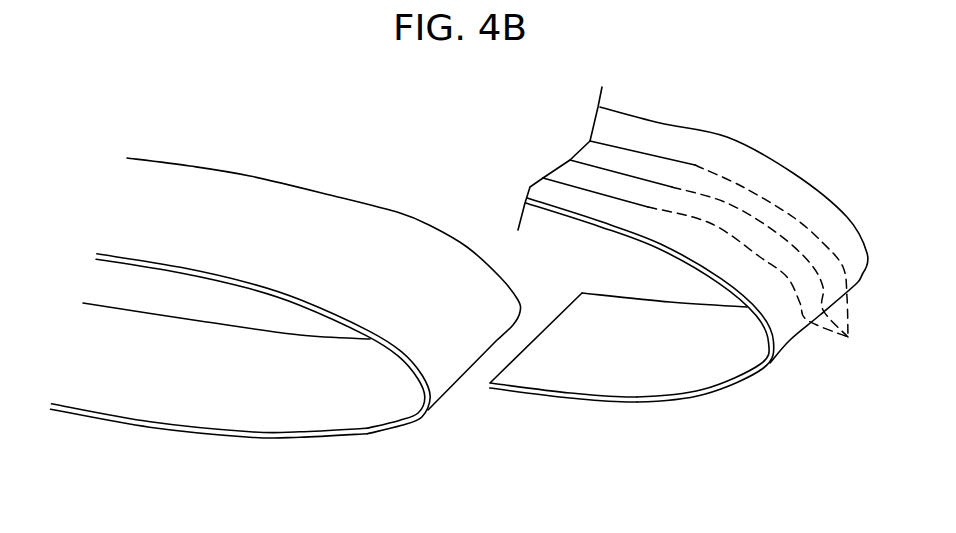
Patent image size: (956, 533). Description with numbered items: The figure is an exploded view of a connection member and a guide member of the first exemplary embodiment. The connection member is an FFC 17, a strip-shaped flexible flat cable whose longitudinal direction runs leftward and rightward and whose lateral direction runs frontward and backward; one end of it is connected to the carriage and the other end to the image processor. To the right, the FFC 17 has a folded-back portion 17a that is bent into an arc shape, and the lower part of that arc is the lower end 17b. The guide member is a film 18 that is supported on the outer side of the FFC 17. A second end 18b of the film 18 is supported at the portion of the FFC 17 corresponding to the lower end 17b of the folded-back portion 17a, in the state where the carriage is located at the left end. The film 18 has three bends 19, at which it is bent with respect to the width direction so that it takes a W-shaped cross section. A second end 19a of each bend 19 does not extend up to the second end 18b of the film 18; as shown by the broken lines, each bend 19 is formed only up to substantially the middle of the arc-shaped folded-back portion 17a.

The FFC 17 is at (223, 190).
The folded-back portion 17a is at (425, 400).
The lower end 17b is at (198, 431).
The film 18 is at (567, 198).
The second end 18b is at (485, 389).
The bend 19 is at (646, 207).
The second end 19a is at (773, 260).